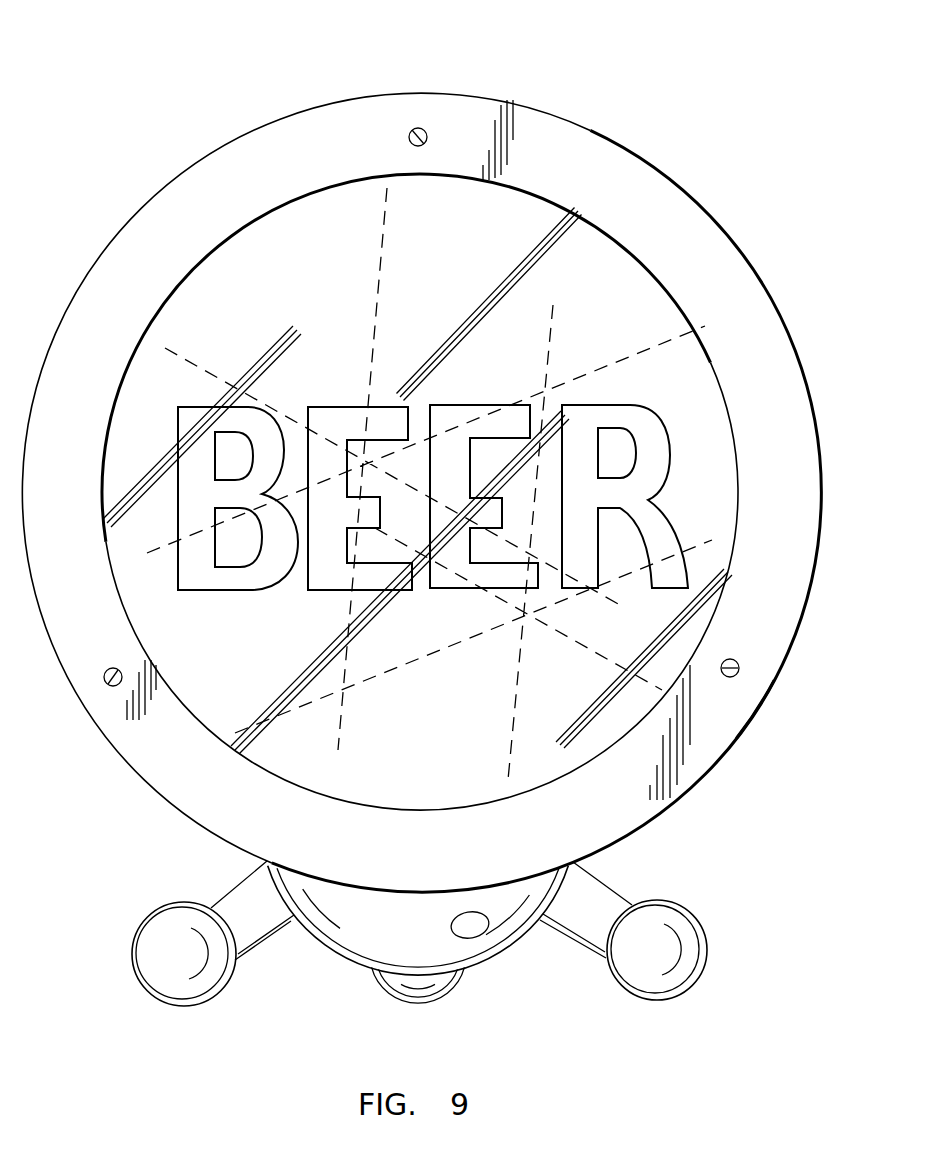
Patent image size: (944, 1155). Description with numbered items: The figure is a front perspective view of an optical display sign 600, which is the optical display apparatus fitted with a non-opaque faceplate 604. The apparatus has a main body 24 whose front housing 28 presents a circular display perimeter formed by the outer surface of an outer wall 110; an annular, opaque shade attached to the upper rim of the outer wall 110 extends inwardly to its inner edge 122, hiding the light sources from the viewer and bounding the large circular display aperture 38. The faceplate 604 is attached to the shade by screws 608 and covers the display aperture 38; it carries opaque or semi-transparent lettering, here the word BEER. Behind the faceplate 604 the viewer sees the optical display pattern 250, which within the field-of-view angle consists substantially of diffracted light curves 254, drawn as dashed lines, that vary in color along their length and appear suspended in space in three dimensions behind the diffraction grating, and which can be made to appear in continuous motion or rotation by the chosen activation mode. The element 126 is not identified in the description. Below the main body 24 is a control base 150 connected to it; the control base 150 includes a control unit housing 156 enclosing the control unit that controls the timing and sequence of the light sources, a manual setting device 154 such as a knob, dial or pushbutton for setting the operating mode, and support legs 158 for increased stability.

The optical display sign 600 is at (318, 56).
The main body 24 is at (712, 172).
The front housing 28 is at (647, 153).
The front ring face 126 is at (570, 118).
The inner edge 122 is at (533, 195).
The faceplate 604 is at (695, 435).
The optical display pattern 250 is at (328, 332).
The diffracted light curves 254 is at (380, 290).
The display aperture 38 is at (145, 650).
The screws 608 is at (732, 658).
The outer wall 110 is at (776, 682).
The control base 150 is at (716, 883).
The control unit housing 156 is at (322, 947).
The manual setting device 154 is at (470, 928).
The support legs 158 is at (155, 918).